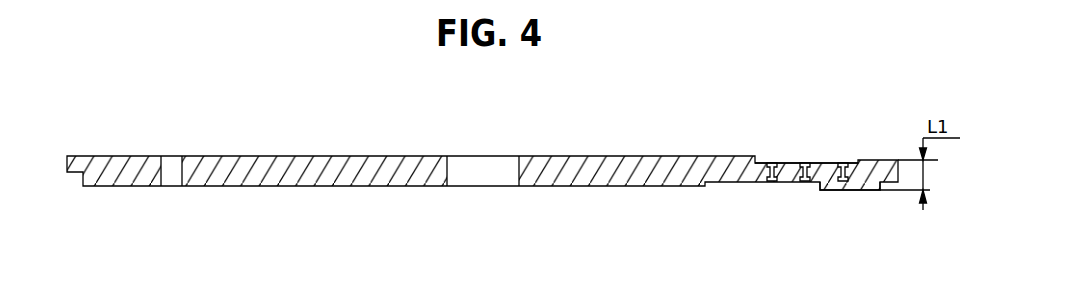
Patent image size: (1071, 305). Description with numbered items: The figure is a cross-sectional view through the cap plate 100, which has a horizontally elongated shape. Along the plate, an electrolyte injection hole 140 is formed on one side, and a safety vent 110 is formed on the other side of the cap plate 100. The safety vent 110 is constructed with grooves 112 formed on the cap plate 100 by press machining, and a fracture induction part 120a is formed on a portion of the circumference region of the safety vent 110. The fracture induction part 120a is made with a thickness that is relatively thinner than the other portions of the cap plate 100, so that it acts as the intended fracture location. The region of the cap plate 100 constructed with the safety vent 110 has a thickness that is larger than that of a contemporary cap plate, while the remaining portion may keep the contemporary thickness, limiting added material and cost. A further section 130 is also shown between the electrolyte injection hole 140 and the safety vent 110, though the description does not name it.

The cap plate 100 is at (280, 162).
The window section 130 is at (449, 171).
The electrolyte injection hole 140 is at (173, 187).
The grooves 112 is at (772, 162).
The safety vent 110 is at (827, 163).
The fracture induction part 120a is at (786, 192).